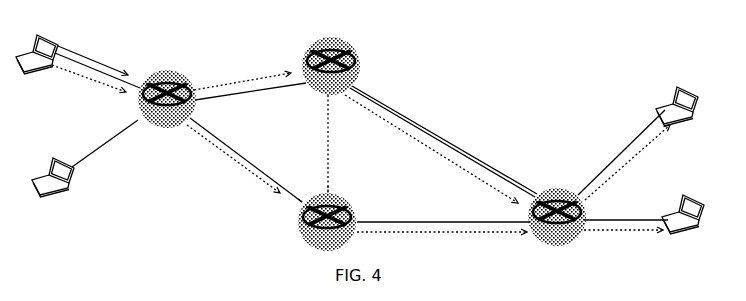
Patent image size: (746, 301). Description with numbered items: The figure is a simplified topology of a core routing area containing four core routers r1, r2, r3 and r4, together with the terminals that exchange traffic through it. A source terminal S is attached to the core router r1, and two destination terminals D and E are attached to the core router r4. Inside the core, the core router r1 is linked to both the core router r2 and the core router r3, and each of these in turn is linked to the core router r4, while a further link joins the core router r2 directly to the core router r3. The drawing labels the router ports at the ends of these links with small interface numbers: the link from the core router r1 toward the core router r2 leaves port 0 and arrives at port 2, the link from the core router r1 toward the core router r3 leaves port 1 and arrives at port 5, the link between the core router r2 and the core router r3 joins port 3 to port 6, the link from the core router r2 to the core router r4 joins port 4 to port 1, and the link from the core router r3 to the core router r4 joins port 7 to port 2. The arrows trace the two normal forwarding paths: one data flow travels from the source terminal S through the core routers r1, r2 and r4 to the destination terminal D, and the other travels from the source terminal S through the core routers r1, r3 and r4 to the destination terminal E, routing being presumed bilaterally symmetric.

The source terminal S is at (77, 60).
The destination terminal D is at (648, 143).
The destination terminal E is at (648, 224).
The core router r1 is at (114, 123).
The core router r2 is at (331, 54).
The core router r3 is at (331, 211).
The core router r4 is at (557, 207).
The router interface 0 is at (250, 84).
The router interface 1 is at (361, 154).
The router interface 2 is at (412, 134).
The router interface 3 is at (322, 144).
The router interface 4 is at (444, 131).
The router interface 5 is at (293, 208).
The router interface 6 is at (320, 183).
The router interface 7 is at (443, 217).